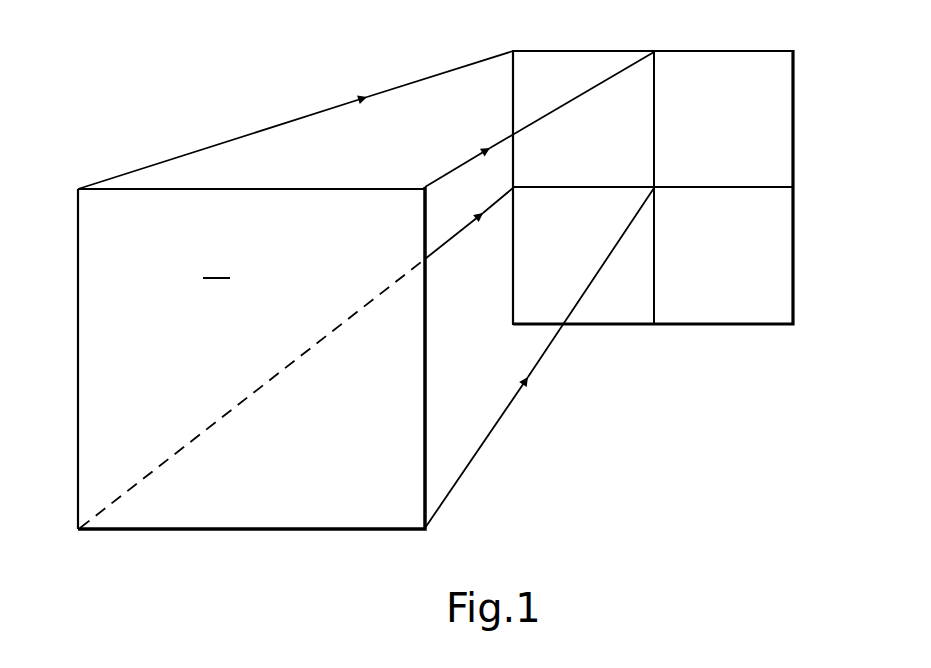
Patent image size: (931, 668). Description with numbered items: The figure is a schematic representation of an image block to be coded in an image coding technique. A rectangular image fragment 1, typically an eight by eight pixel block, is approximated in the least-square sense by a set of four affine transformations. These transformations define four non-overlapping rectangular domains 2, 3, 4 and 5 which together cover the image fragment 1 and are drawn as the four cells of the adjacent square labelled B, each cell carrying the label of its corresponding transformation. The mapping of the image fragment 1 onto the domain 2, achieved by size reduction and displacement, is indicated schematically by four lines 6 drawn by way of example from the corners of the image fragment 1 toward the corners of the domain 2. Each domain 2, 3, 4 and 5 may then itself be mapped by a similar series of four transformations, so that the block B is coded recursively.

The original image block A 1 is at (78, 241).
The first sub-image w1(A) 2 is at (583, 50).
The second sub-image w2(A) 3 is at (733, 50).
The third sub-image w3(A) 4 is at (604, 325).
The fourth sub-image w4(A) 5 is at (745, 325).
The transformation mapping arrow 6 is at (270, 129).
The transformed image B is at (778, 40).